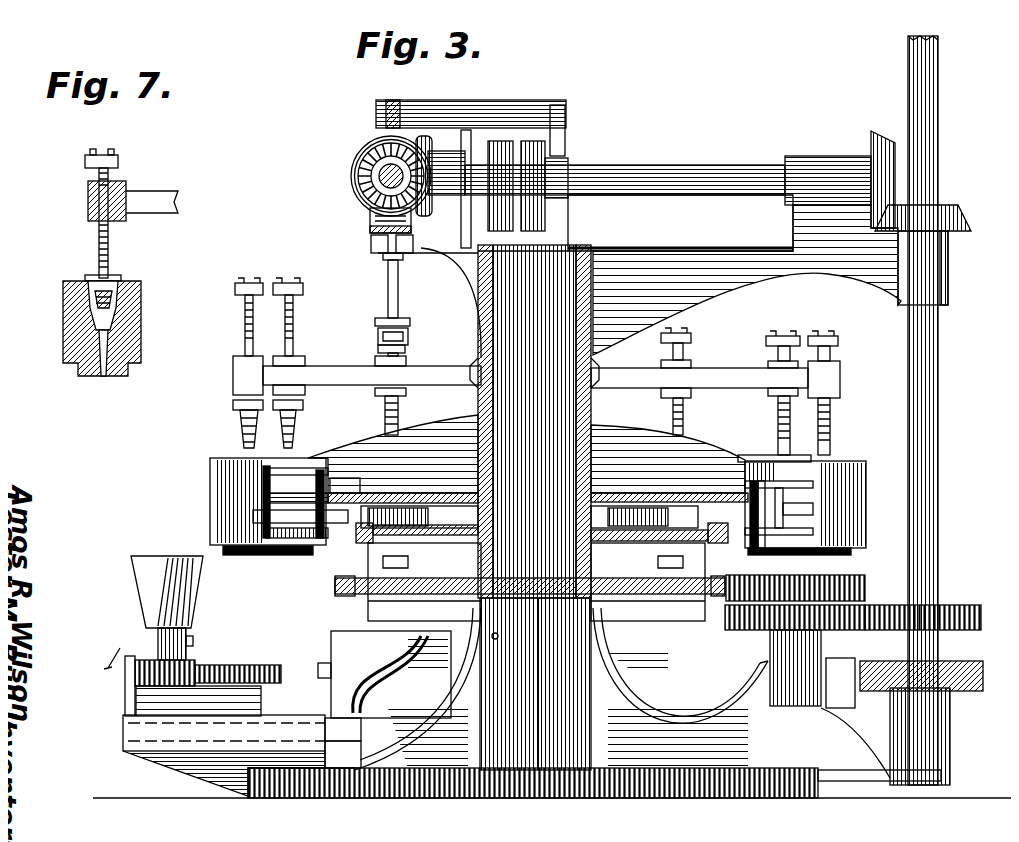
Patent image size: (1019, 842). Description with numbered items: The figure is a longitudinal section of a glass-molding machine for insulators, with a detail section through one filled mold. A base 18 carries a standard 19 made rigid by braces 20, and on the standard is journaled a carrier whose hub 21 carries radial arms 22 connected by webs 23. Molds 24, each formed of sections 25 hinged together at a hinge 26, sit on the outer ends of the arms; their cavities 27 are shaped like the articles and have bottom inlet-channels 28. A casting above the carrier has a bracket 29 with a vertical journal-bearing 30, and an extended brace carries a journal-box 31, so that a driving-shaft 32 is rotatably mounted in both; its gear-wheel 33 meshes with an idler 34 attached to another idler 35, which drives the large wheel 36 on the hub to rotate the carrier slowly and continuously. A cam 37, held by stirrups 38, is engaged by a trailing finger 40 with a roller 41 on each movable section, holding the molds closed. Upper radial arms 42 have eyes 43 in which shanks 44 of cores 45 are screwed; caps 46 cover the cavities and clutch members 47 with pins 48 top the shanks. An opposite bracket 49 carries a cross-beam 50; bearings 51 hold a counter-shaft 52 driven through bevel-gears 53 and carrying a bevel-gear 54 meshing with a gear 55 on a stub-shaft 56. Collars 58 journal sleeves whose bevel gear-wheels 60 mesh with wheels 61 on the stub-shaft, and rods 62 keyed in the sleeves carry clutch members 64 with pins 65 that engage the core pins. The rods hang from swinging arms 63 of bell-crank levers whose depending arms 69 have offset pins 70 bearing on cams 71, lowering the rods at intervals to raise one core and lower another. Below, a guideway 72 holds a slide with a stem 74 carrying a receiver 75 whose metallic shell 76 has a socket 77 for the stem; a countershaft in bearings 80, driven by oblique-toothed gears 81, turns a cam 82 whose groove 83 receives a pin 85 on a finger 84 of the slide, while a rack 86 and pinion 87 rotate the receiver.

In FIG. 3, the base 18 is at (594, 783).
In FIG. 3, the standard 19 is at (583, 399).
In FIG. 3, the braces 20 is at (508, 684).
In FIG. 3, the hub 21 is at (470, 407).
In FIG. 3, the radial arms 22 is at (863, 483).
In FIG. 3, the webs 23 is at (430, 486).
In FIG. 7, the molds 24 is at (55, 305).
In FIG. 3, the molds 24 is at (202, 485).
In FIG. 7, the sections 25 is at (133, 335).
In FIG. 3, the hinge 26 is at (501, 480).
In FIG. 7, the cavities 27 is at (110, 304).
In FIG. 7, the inlet-channels 28 is at (120, 362).
In FIG. 3, the bracket 29 is at (661, 276).
In FIG. 3, the journal-bearing 30 is at (940, 268).
In FIG. 3, the journal-box 31 is at (942, 722).
In FIG. 3, the driving-shaft 32 is at (930, 505).
In FIG. 3, the gear-wheel 33 is at (973, 604).
In FIG. 3, the idler 34 is at (755, 620).
In FIG. 3, the idler 35 is at (857, 572).
In FIG. 3, the large wheel 36 is at (648, 598).
In FIG. 3, the cam 37 is at (355, 535).
In FIG. 3, the stirrups 38 is at (362, 587).
In FIG. 3, the finger 40 is at (292, 518).
In FIG. 3, the roller 41 is at (336, 522).
In FIG. 7, the radial arms 42 is at (153, 197).
In FIG. 3, the radial arms 42 is at (535, 371).
In FIG. 7, the eyes 43 is at (80, 192).
In FIG. 3, the eyes 43 is at (225, 370).
In FIG. 7, the shanks 44 is at (101, 243).
In FIG. 3, the shanks 44 is at (250, 312).
In FIG. 7, the cores 45 is at (106, 270).
In FIG. 3, the cores 45 is at (233, 420).
In FIG. 7, the caps 46 is at (84, 266).
In FIG. 3, the caps 46 is at (225, 397).
In FIG. 3, the clutch members 47 is at (227, 282).
In FIG. 7, the pins 48 is at (102, 146).
In FIG. 3, the pins 48 is at (265, 273).
In FIG. 3, the bracket 49 is at (440, 252).
In FIG. 3, the cross-beam 50 is at (363, 236).
In FIG. 3, the bearings 51 is at (822, 144).
In FIG. 3, the counter-shaft 52 is at (682, 157).
In FIG. 3, the bevel-gears 53 is at (872, 123).
In FIG. 3, the bevel-gear 54 is at (414, 128).
In FIG. 3, the bevel-gear 55 is at (350, 148).
In FIG. 3, the stub-shaft 56 is at (371, 172).
In FIG. 3, the collars 58 is at (378, 252).
In FIG. 3, the bevel gear-wheels 60 is at (362, 210).
In FIG. 3, the bevel gear-wheels 61 is at (343, 165).
In FIG. 3, the rods 62 is at (391, 289).
In FIG. 3, the swinging arms 63 is at (368, 107).
In FIG. 3, the clutch members 64 is at (403, 314).
In FIG. 3, the pins 65 is at (401, 330).
In FIG. 3, the arms 69 is at (566, 135).
In FIG. 3, the offset pins 70 is at (484, 205).
In FIG. 3, the cams 71 is at (541, 194).
In FIG. 3, the guideway 72 is at (115, 740).
In FIG. 3, the stem 74 is at (193, 686).
In FIG. 3, the receiver 75 is at (125, 580).
In FIG. 3, the metallic shell 76 is at (136, 598).
In FIG. 3, the socket 77 is at (150, 640).
In FIG. 3, the bearings 80 is at (855, 708).
In FIG. 3, the oblique-toothed gears 81 is at (975, 670).
In FIG. 3, the cam 82 is at (323, 632).
In FIG. 3, the groove 83 is at (390, 674).
In FIG. 3, the finger 84 is at (343, 754).
In FIG. 3, the pin 85 is at (353, 718).
In FIG. 3, the rack 86 is at (238, 663).
In FIG. 3, the pinion 87 is at (182, 656).